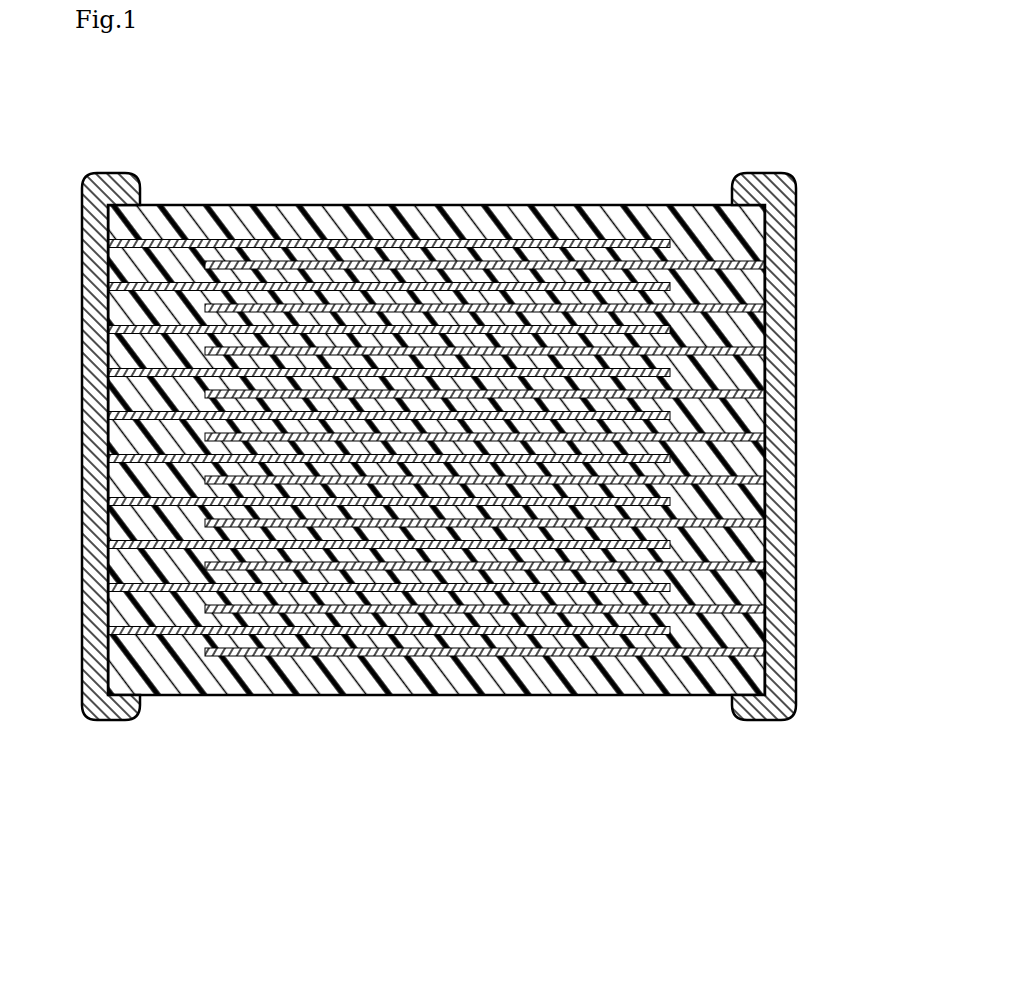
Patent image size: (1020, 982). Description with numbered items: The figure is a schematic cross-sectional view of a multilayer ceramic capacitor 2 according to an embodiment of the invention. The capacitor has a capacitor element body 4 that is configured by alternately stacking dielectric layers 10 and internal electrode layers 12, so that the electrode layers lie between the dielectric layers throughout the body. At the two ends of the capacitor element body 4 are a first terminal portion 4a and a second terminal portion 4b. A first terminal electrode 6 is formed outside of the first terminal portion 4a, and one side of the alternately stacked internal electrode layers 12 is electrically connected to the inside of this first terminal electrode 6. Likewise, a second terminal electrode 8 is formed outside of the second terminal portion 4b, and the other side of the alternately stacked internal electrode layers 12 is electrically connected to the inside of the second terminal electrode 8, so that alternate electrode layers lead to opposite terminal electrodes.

The multilayer ceramic capacitor 2 is at (481, 444).
The capacitor element body 4 is at (481, 455).
The first terminal portion 4a is at (104, 222).
The second terminal portion 4b is at (766, 551).
The first terminal electrode 6 is at (104, 696).
The second terminal electrode 8 is at (757, 180).
The dielectric layers 10 is at (370, 240).
The internal electrode layers 12 is at (475, 238).